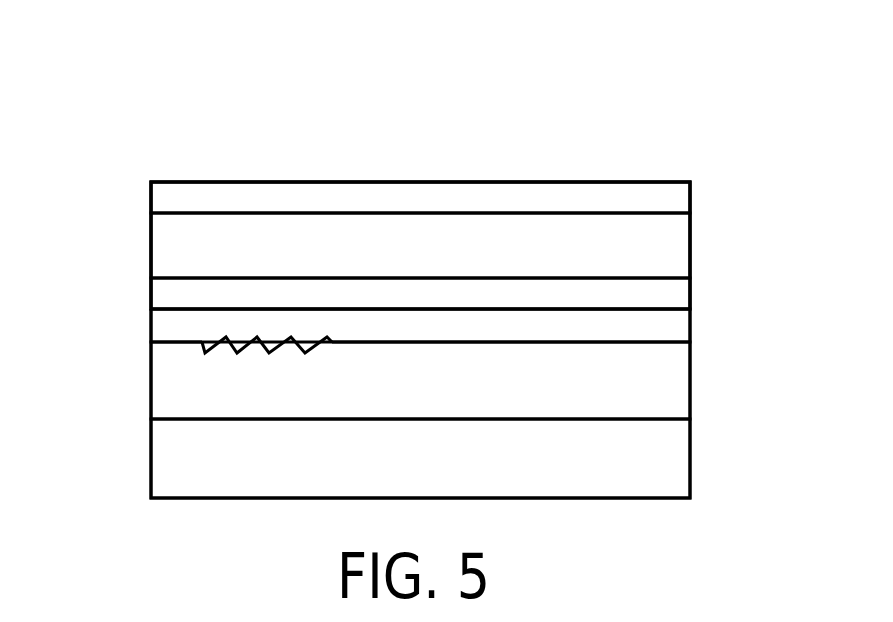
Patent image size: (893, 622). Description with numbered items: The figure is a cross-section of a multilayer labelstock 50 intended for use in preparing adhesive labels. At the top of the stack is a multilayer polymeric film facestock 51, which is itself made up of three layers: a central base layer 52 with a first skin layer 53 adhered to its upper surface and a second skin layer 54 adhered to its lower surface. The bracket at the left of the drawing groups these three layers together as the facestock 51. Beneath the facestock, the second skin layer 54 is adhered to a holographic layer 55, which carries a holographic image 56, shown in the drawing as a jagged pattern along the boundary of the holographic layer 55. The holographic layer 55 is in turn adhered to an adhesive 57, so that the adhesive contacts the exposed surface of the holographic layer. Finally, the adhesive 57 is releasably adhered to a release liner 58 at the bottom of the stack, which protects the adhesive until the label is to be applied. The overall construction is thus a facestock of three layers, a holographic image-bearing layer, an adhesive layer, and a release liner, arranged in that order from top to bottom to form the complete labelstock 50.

The labelstock 50 is at (622, 79).
The multilayer polymeric film facestock 51 is at (359, 246).
The base layer 52 is at (665, 255).
The first skin layer 53 is at (670, 197).
The second skin layer 54 is at (670, 293).
The holographic layer 55 is at (669, 323).
The image 56 is at (258, 352).
The adhesive 57 is at (653, 387).
The release liner 58 is at (670, 464).